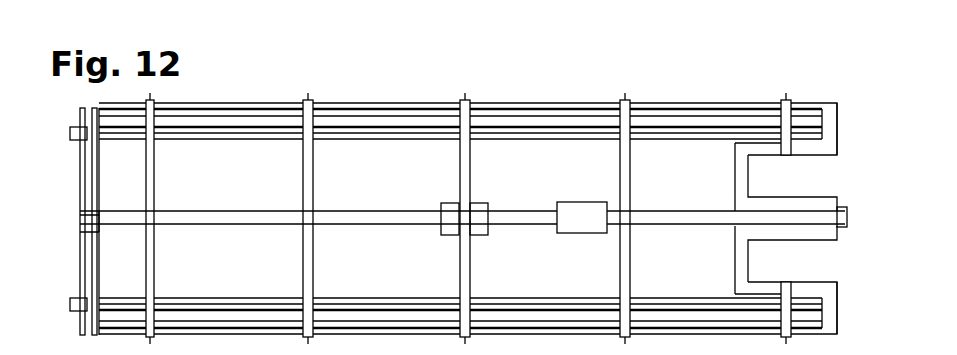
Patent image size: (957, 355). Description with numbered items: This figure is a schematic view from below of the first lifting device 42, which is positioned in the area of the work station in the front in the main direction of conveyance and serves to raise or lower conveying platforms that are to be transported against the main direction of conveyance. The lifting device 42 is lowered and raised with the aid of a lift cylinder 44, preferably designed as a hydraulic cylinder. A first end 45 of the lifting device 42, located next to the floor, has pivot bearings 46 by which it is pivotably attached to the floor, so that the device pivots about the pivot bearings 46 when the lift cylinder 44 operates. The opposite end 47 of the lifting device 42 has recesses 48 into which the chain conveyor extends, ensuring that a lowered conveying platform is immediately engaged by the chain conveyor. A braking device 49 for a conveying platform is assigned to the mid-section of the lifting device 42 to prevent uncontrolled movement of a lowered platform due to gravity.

The first lifting device 42 is at (590, 99).
The lift cylinder 44 is at (568, 201).
The first end 45 is at (104, 106).
The pivot bearing 46 is at (72, 137).
The end 47 is at (836, 100).
The recess 48 is at (772, 177).
The braking device 49 is at (453, 201).